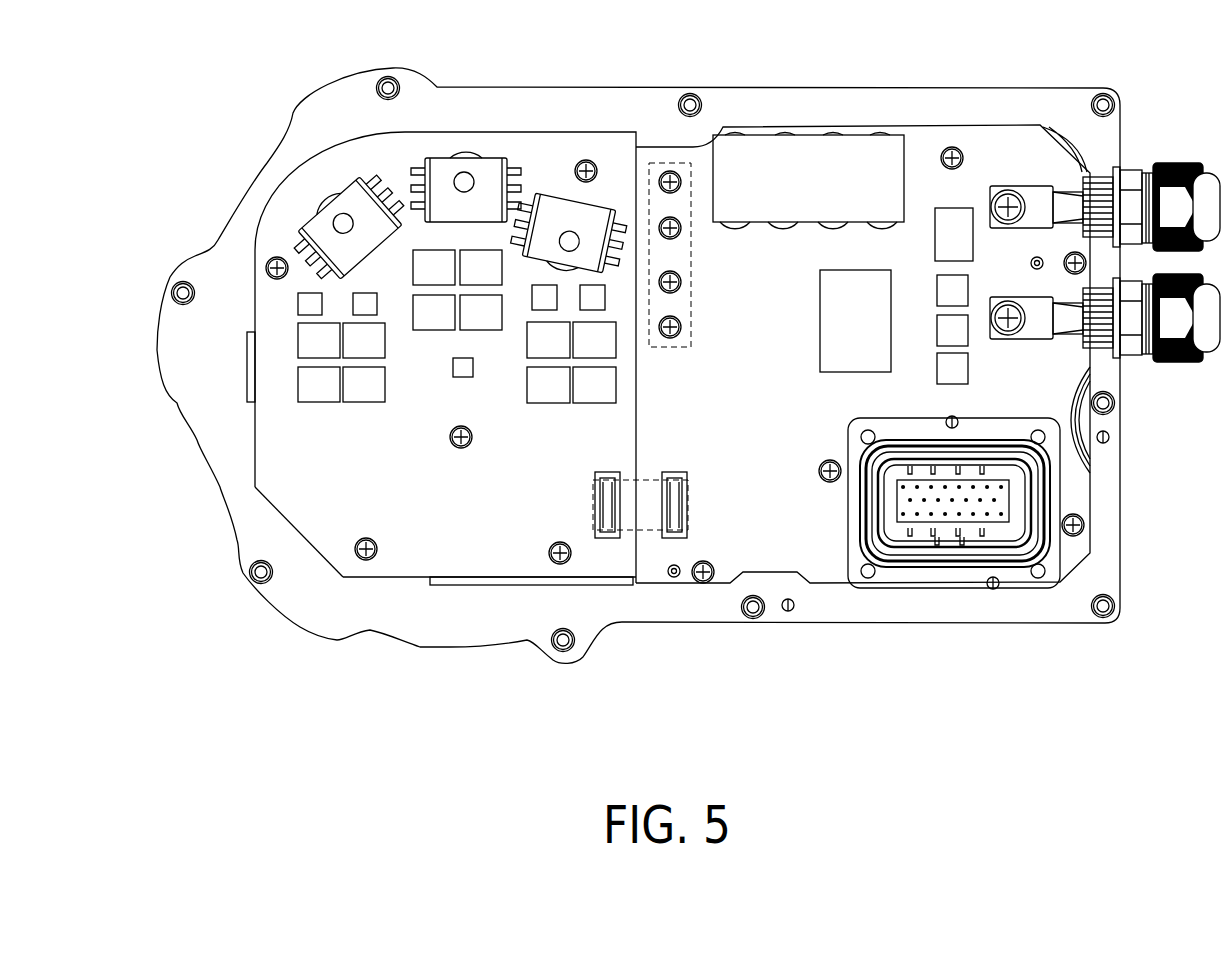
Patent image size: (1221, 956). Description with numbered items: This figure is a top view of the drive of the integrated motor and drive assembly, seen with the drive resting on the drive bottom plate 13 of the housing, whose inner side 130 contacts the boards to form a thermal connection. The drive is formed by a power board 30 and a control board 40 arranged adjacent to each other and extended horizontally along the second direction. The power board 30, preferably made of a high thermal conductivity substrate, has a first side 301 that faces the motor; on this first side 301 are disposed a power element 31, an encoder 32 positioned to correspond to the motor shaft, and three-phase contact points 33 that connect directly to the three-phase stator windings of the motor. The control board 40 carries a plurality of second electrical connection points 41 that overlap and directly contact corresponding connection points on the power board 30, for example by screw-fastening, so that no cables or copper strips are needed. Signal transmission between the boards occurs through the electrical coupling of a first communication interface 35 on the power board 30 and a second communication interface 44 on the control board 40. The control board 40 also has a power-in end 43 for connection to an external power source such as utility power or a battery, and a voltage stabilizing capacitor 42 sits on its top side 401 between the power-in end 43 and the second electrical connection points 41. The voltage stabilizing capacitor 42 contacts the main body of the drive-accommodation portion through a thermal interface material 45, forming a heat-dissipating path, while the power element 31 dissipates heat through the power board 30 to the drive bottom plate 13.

The drive bottom plate 13 is at (277, 613).
The power board 30 is at (254, 487).
The first side 301 is at (283, 432).
The power element 31 is at (310, 340).
The encoder 32 is at (455, 362).
The three-phase contact points 33 is at (320, 226).
The first communication interface 35 is at (612, 508).
The control board 40 is at (1038, 122).
The top side 401 is at (987, 140).
The inner side 130 is at (1098, 135).
The second electrical connection points 41 is at (661, 160).
The voltage stabilizing capacitor 42 is at (784, 134).
The thermal interface material 45 is at (885, 150).
The power-in end 43 is at (1130, 332).
The second communication interface 44 is at (678, 505).